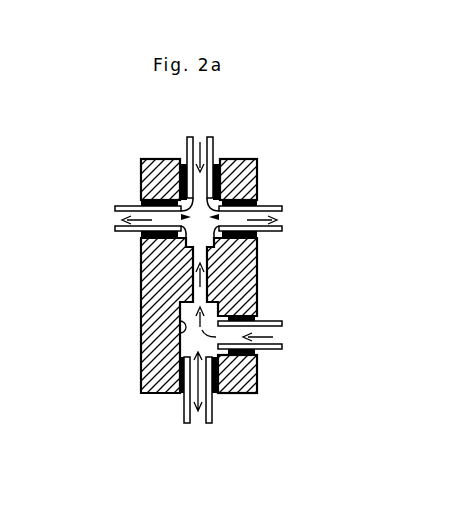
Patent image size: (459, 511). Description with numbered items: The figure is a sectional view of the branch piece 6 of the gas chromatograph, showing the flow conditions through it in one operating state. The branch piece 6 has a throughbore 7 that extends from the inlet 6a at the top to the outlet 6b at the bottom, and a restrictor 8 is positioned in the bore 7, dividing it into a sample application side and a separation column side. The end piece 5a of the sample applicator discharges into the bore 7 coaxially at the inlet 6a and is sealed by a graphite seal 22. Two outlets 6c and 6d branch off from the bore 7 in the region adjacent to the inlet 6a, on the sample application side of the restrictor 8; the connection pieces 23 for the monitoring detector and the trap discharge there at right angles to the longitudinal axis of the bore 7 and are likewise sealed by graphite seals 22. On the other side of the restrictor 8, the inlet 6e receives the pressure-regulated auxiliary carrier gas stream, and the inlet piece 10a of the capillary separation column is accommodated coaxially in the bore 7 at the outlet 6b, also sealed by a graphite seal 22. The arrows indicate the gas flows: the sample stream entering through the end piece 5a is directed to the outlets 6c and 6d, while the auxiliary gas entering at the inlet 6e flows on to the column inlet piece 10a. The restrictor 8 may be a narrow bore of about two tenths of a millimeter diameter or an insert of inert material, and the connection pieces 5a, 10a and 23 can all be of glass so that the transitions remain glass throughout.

The end piece of the sample applicator 5a is at (213, 157).
The branch piece 6 is at (152, 373).
The inlet 6a is at (202, 119).
The outlet 6b is at (197, 365).
The outlet 6c is at (290, 220).
The outlet 6d is at (108, 218).
The inlet 6e is at (268, 337).
The throughbore 7 is at (178, 337).
The restrictor 8 is at (190, 276).
The inlet piece of the capillary separation column 10a is at (210, 400).
The graphite seal 22 is at (185, 158).
The connection pieces 23 is at (140, 205).